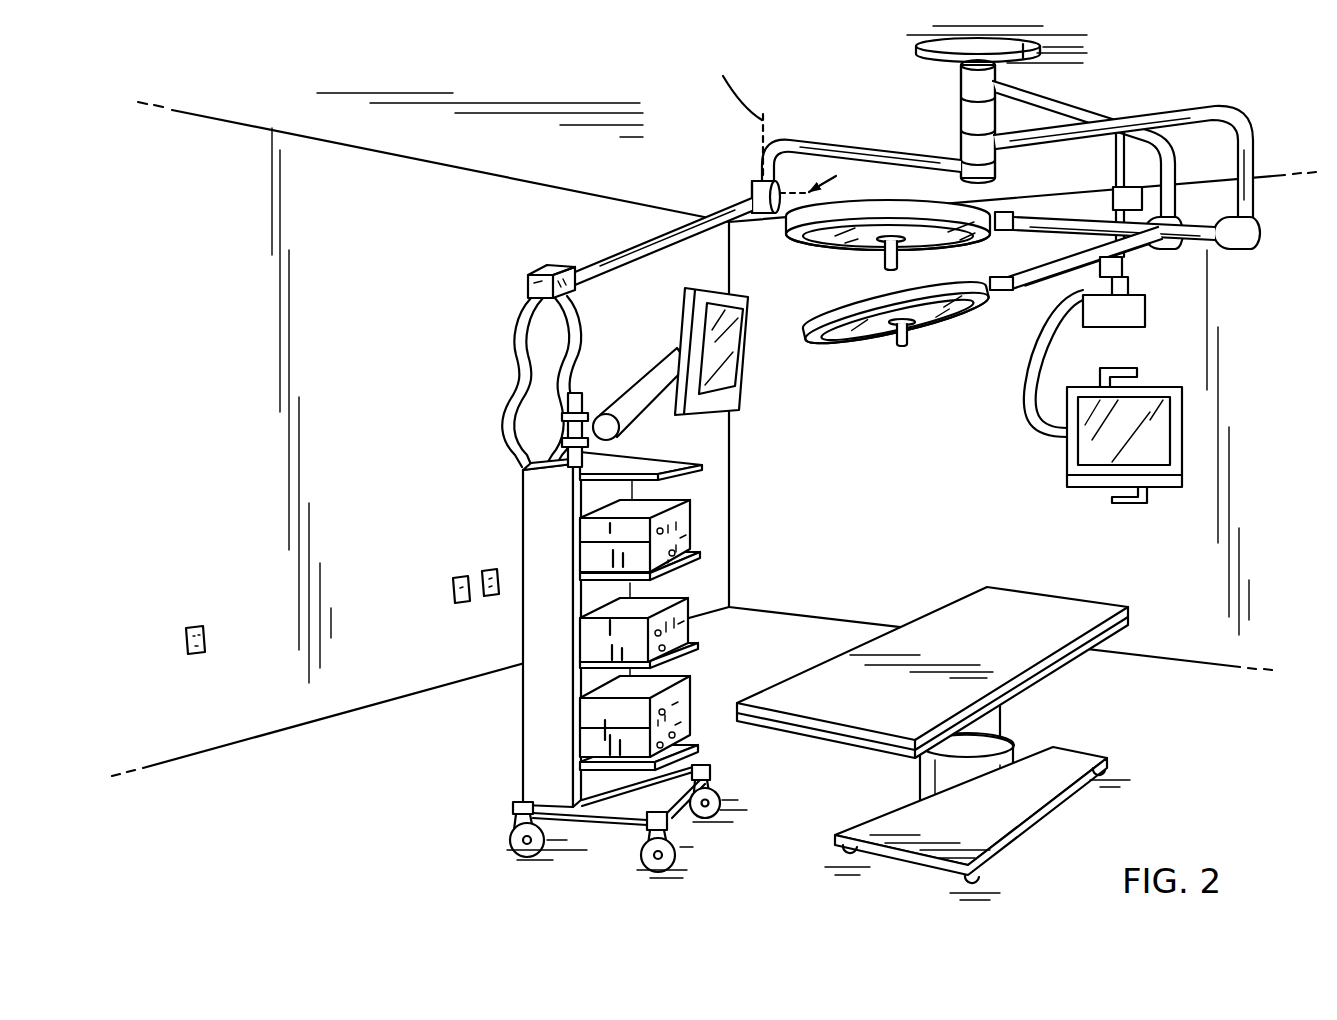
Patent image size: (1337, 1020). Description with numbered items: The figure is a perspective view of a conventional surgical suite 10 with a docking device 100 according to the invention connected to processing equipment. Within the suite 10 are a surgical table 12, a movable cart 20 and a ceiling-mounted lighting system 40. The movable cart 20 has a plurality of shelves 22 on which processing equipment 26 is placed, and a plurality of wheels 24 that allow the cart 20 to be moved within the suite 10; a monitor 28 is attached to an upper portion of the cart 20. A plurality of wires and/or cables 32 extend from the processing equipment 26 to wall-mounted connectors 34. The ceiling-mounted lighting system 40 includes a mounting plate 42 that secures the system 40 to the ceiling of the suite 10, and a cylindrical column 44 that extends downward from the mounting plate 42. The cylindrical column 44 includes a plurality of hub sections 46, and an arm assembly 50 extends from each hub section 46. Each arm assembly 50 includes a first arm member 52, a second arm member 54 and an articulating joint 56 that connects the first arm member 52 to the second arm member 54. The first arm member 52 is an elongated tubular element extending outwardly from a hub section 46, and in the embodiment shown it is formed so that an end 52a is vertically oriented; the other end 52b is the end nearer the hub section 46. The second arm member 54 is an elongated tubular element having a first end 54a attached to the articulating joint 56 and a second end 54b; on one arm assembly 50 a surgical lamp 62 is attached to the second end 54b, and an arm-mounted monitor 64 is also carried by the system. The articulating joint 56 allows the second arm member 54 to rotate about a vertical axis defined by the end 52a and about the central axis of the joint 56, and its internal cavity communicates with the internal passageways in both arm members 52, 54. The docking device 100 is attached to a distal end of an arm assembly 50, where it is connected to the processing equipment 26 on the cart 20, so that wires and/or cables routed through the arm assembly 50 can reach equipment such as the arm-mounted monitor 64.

The surgical suite 10 is at (656, 108).
The surgical table 12 is at (1086, 608).
The movable cart 20 is at (506, 731).
The shelves 22 is at (702, 465).
The wheels 24 is at (722, 806).
The processing equipment 26 is at (600, 560).
The monitor 28 is at (735, 356).
The wires and/or cables 32 is at (546, 345).
The wall-mounted connectors 34 is at (488, 572).
The ceiling-mounted lighting system 40 is at (1152, 70).
The mounting plate 42 is at (928, 47).
The cylindrical column 44 is at (1042, 43).
The hub sections 46 is at (966, 110).
The arm assembly 50 is at (810, 131).
The first arm member 52 is at (853, 143).
The end of first arm member 52a is at (762, 160).
The arm base end 52b is at (948, 160).
The second arm member 54 is at (643, 236).
The first end of second arm member 54a is at (750, 204).
The second end of second arm member 54b is at (583, 262).
The articulating joint 56 is at (757, 186).
The surgical lamp 62 is at (836, 251).
The arm-mounted monitor 64 is at (1185, 425).
The docking device 100 is at (535, 251).